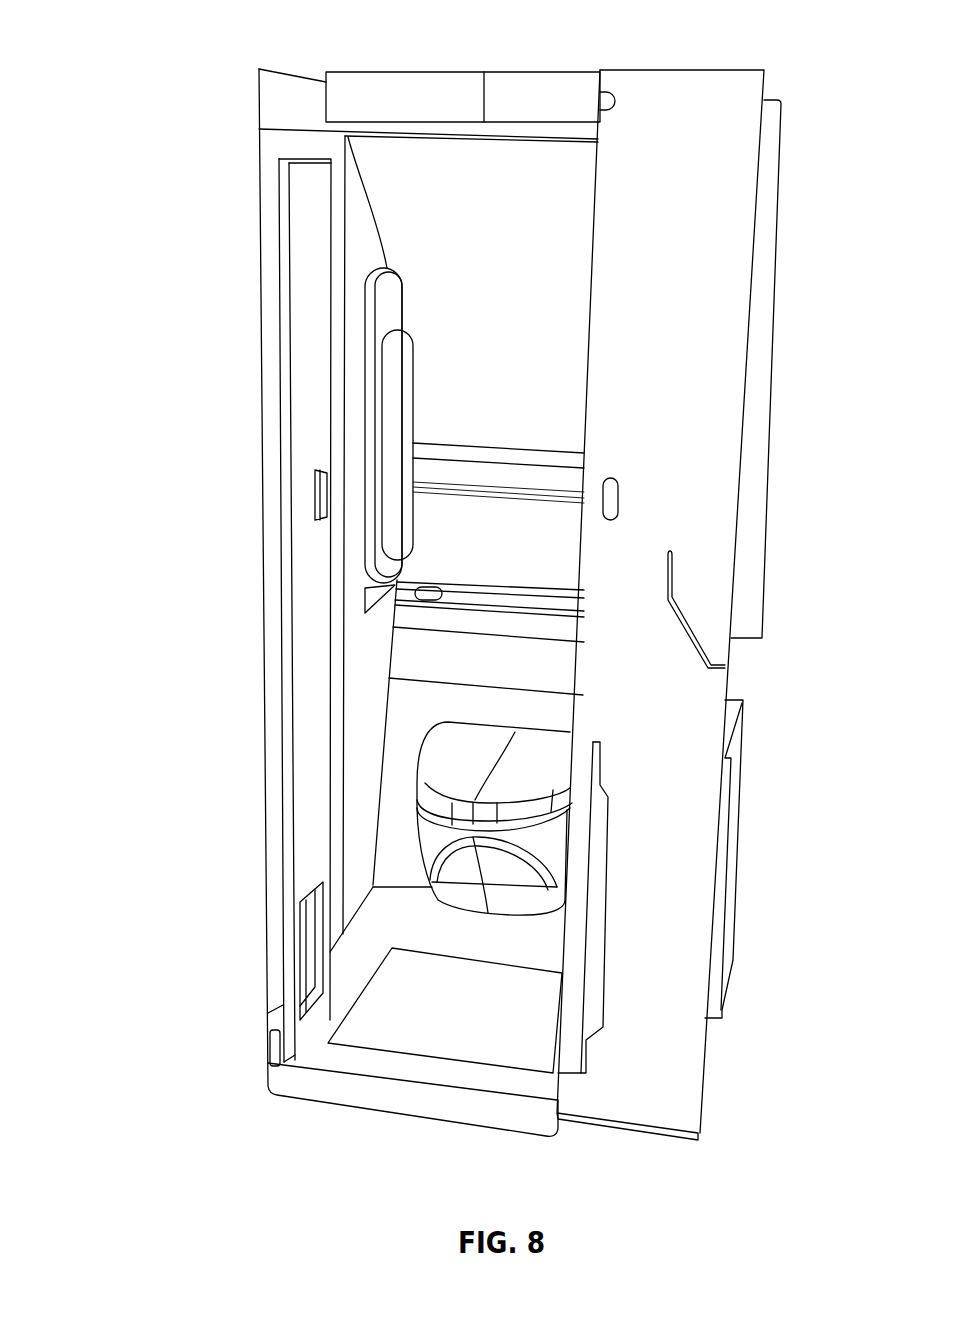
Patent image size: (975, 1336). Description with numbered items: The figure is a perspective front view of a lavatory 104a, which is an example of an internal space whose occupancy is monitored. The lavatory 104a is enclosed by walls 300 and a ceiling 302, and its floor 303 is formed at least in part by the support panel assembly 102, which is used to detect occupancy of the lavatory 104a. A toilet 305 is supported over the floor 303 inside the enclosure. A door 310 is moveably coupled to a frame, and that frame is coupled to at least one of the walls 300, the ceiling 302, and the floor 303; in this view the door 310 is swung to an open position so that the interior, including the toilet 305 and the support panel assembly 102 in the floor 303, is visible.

The lavatory 104a is at (148, 45).
The ceiling 302 is at (433, 103).
The walls 300 is at (490, 217).
The door 310 is at (672, 387).
The toilet 305 is at (543, 810).
The floor 303 is at (357, 1039).
The support panel assembly 102 is at (507, 1018).